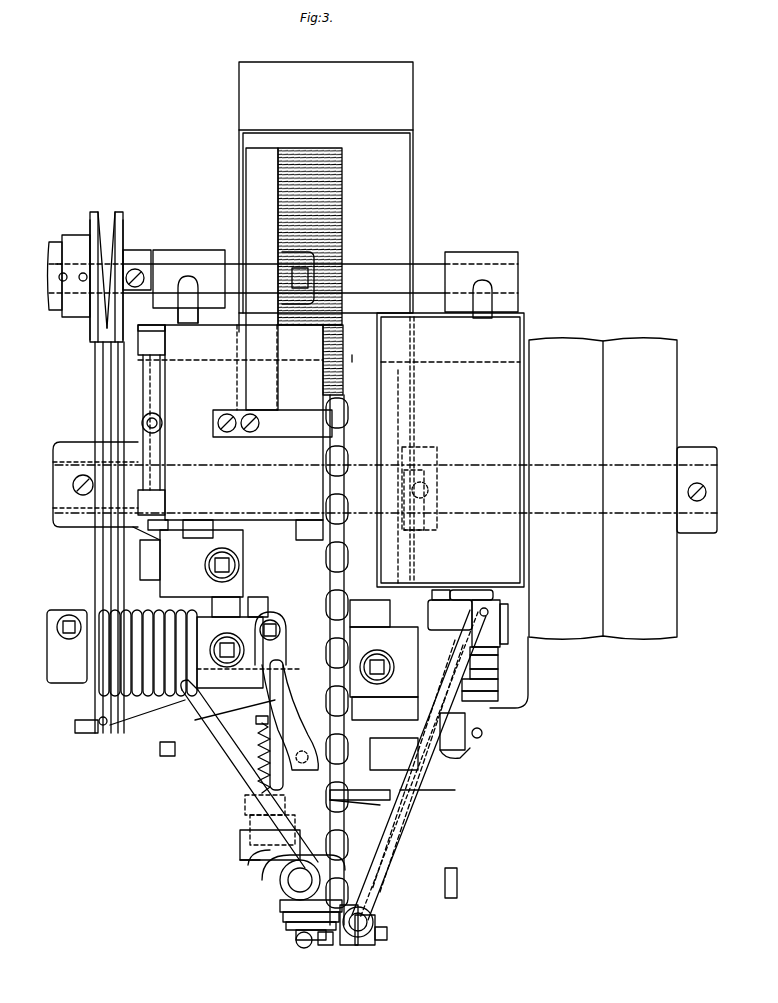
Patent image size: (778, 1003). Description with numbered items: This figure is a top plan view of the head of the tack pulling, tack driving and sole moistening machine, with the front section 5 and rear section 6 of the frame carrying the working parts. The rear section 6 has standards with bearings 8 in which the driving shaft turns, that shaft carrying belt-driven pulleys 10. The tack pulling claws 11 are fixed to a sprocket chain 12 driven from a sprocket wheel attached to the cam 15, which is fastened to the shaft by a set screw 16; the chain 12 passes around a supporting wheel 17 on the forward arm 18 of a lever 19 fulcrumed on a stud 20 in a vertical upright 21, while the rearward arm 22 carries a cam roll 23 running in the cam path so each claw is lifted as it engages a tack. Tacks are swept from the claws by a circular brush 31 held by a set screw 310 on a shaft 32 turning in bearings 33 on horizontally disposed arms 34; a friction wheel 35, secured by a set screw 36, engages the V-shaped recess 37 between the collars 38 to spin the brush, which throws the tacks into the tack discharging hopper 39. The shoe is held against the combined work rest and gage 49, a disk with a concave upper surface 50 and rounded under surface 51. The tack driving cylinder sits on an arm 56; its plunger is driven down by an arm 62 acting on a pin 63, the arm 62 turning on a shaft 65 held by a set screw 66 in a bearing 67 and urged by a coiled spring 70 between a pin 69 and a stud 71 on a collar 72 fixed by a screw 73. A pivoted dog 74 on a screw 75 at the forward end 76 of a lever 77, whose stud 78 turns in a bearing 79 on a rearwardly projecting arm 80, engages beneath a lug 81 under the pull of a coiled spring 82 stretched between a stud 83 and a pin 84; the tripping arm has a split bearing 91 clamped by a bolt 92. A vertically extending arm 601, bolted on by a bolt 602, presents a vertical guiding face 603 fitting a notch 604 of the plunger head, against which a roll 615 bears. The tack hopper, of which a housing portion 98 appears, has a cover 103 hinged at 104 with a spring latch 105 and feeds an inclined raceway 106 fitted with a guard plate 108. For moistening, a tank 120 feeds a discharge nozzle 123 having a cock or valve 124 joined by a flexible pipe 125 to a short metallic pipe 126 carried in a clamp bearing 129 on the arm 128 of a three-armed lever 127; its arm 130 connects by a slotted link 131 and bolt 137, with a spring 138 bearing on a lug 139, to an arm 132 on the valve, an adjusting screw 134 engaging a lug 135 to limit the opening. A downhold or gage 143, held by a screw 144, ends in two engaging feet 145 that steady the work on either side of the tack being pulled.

The front frame section 5 is at (250, 690).
The rear frame section 6 is at (140, 530).
The bearings 8 is at (70, 442).
The pulleys 10 is at (580, 340).
The tack pulling claws 11 is at (322, 400).
The sprocket chain 12 is at (320, 462).
The cam 15 is at (359, 350).
The set screw 16 is at (428, 490).
The pulley or supporting wheel 17 is at (425, 812).
The forward arm 18 is at (360, 792).
The lever 19 is at (442, 598).
The stud 20 is at (500, 610).
The vertical upright 21 is at (384, 698).
The rearward arm 22 is at (420, 540).
The cam roll 23 is at (405, 445).
The circular brush 31 is at (343, 195).
The shaft 32 is at (283, 278).
The bearings 33 is at (190, 250).
The horizontally disposed arms 34 is at (199, 318).
The friction wheel 35 is at (103, 549).
The set screw 36 is at (73, 484).
The V-shaped recess 37 is at (104, 214).
The disks or collars 38 is at (89, 216).
The tack discharging hopper 39 is at (414, 193).
The combined work rest and gage 49 is at (445, 758).
The concave upper surface 50 is at (438, 790).
The rounded under surface 51 is at (232, 800).
The arm 56 is at (240, 850).
The arm 62 is at (262, 848).
The pin 63 is at (300, 892).
The shaft 65 is at (47, 640).
The set screw 66 is at (227, 633).
The bearing 67 is at (228, 676).
The pin 69 is at (160, 748).
The coiled spring 70 is at (110, 682).
The stud 71 is at (108, 725).
The collar 72 is at (75, 726).
The bolt or screw 73 is at (69, 615).
The pivoted dog 74 is at (240, 838).
The screw 75 is at (358, 804).
The forward end 76 is at (255, 712).
The lever 77 is at (217, 563).
The stud 78 is at (150, 556).
The bearing 79 is at (203, 535).
The rearwardly projecting arm 80 is at (226, 600).
The lug 81 is at (262, 866).
The coiled spring 82 is at (245, 805).
The stud 83 is at (256, 730).
The pin 84 is at (250, 820).
The split bearing 91 is at (240, 700).
The bolt 92 is at (280, 615).
The housing 98 is at (230, 422).
The cover 103 is at (170, 370).
The hinge 104 is at (152, 322).
The spring latch 105 is at (272, 423).
The inclined raceway 106 is at (269, 600).
The guard plate 108 is at (352, 624).
The tank 120 is at (524, 318).
The discharge nozzle 123 is at (500, 664).
The cock or valve 124 is at (470, 590).
The flexible pipe 125 is at (450, 775).
The short metallic pipe 126 is at (375, 915).
The three-armed lever 127 is at (470, 750).
The arm 128 is at (420, 826).
The clamp bearing 129 is at (378, 945).
The arm 130 is at (466, 726).
The link 131 is at (500, 699).
The arm 132 is at (496, 625).
The adjusting screw 134 is at (500, 652).
The lug 135 is at (460, 612).
The bolt or screw 137 is at (483, 733).
The spring 138 is at (500, 688).
The lug 139 is at (500, 675).
The downhold or gage 143 is at (358, 893).
The screw 144 is at (328, 948).
The engaging feet 145 is at (290, 878).
The set screw 310 is at (316, 262).
The vertically extending arm 601 is at (300, 942).
The bolt 602 is at (304, 948).
The vertical guiding face 603 is at (285, 920).
The notch or recess 604 is at (288, 932).
The roll 615 is at (280, 908).